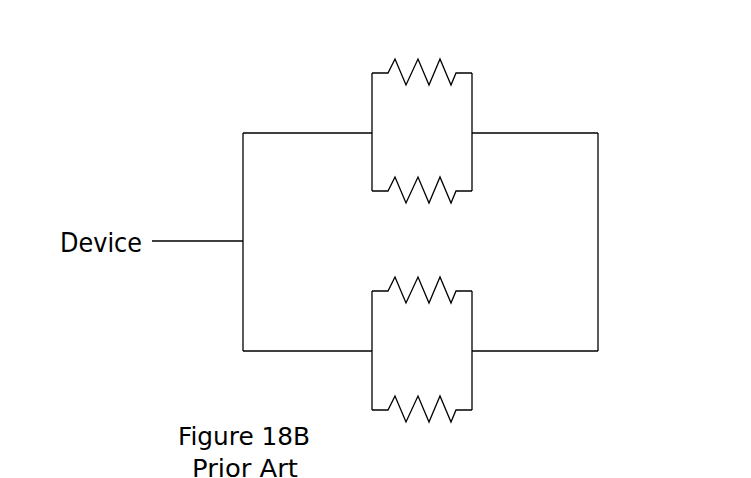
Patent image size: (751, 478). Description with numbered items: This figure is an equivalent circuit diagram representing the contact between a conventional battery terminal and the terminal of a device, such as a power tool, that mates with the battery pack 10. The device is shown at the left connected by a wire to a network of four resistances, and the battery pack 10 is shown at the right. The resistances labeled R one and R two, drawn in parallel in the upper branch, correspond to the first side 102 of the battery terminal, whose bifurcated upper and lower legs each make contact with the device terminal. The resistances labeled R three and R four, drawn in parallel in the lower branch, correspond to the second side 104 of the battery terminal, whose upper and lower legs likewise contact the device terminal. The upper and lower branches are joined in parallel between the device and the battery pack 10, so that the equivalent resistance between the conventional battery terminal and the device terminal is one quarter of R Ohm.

The battery pack 10 is at (598, 241).
The first side 102 is at (468, 130).
The second side 104 is at (468, 365).